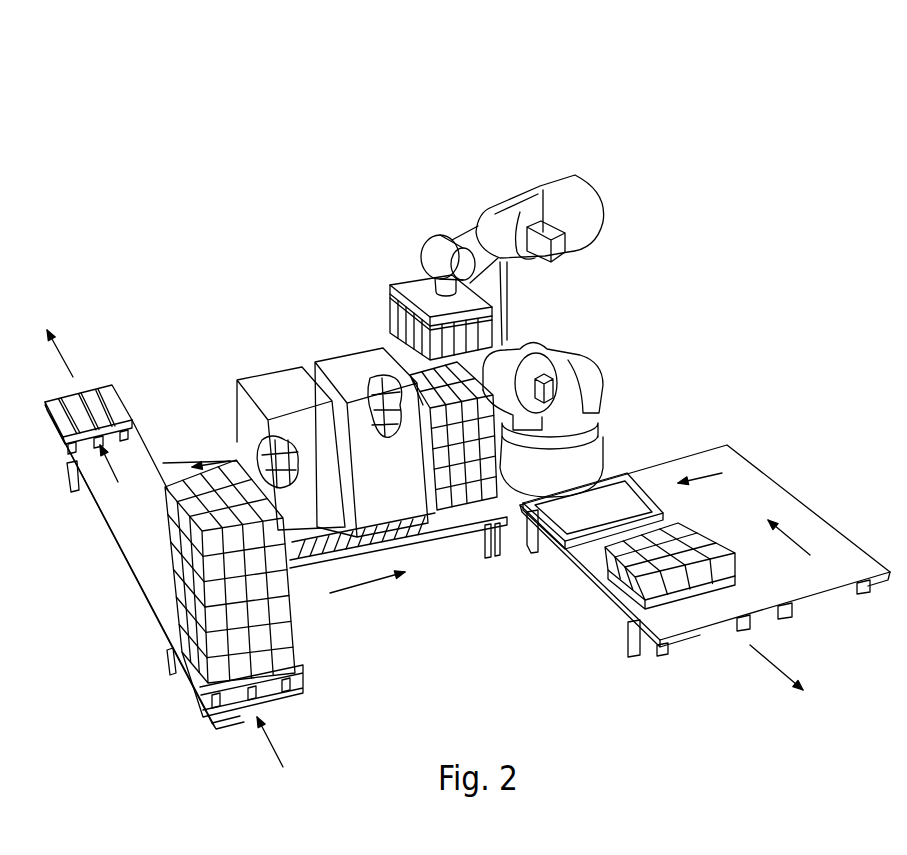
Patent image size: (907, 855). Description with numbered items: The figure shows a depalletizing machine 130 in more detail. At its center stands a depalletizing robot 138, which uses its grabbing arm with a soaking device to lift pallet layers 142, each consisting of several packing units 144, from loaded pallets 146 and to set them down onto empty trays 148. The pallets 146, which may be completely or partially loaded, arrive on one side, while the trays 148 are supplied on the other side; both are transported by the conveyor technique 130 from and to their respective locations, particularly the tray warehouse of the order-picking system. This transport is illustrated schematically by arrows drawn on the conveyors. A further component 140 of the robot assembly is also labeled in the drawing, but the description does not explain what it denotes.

The depalletizing machine 130 is at (310, 243).
The depalletizing robot 138 is at (605, 360).
The robot arm wrist 140 is at (413, 282).
The pallet layers 142 is at (378, 303).
The packing units 144 is at (478, 495).
The loaded pallets 146 is at (288, 633).
The empty trays 148 is at (583, 533).